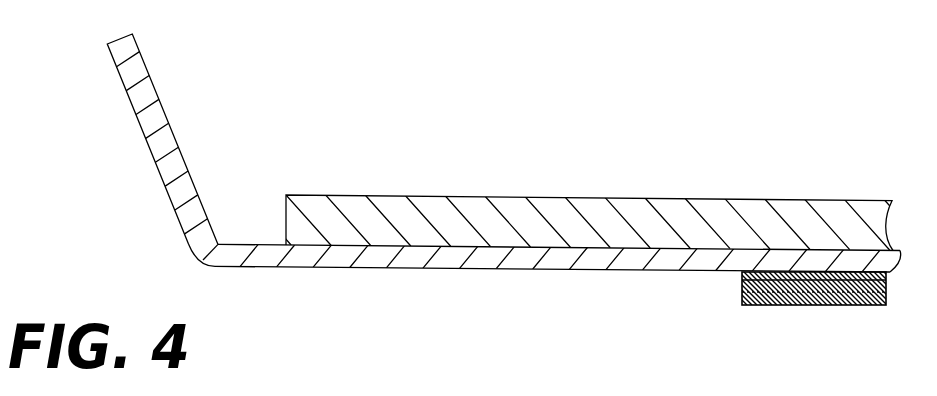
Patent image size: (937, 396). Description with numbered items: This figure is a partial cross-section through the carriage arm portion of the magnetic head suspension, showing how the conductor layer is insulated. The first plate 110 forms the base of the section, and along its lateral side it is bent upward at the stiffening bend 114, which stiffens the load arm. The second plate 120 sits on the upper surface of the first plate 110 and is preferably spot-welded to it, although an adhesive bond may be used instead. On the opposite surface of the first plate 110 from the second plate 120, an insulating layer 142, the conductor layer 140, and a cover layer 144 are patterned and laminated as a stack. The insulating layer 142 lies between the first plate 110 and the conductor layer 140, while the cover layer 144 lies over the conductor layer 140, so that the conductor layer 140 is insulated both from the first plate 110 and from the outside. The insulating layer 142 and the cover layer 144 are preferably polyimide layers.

The first plate 110 is at (300, 257).
The stiffening bend 114 is at (155, 118).
The second plate 120 is at (522, 205).
The conductor layer 140 is at (758, 305).
The insulating layer 142 is at (738, 275).
The cover layer 144 is at (860, 305).